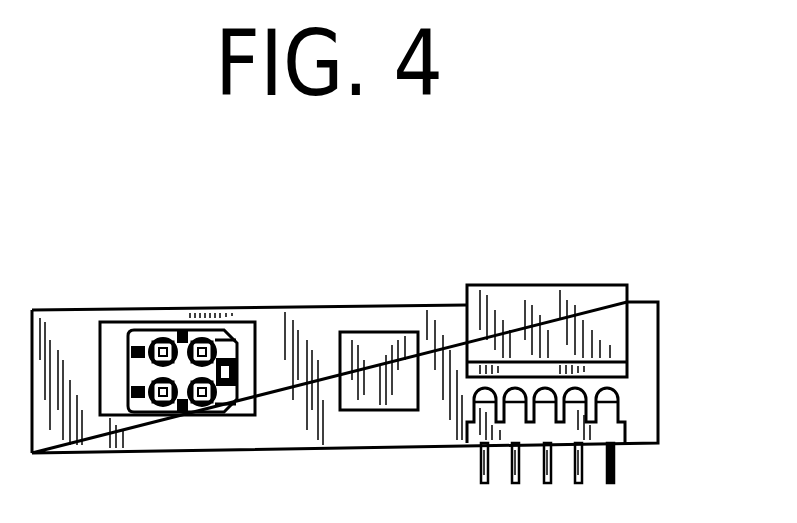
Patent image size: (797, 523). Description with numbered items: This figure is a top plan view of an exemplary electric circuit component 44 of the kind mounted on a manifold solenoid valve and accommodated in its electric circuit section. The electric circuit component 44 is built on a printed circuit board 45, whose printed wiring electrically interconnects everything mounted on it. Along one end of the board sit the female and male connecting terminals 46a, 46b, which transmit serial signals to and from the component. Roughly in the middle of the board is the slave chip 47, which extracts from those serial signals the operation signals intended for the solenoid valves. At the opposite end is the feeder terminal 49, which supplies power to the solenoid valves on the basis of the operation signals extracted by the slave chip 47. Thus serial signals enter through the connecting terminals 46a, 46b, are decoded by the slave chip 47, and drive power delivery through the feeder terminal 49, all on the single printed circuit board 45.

The electric circuit component 44 is at (692, 351).
The printed circuit board 45 is at (292, 417).
The female connecting terminal 46a is at (581, 297).
The male connecting terminal 46b is at (614, 468).
The slave chip 47 is at (378, 345).
The feeder terminal 49 is at (160, 345).